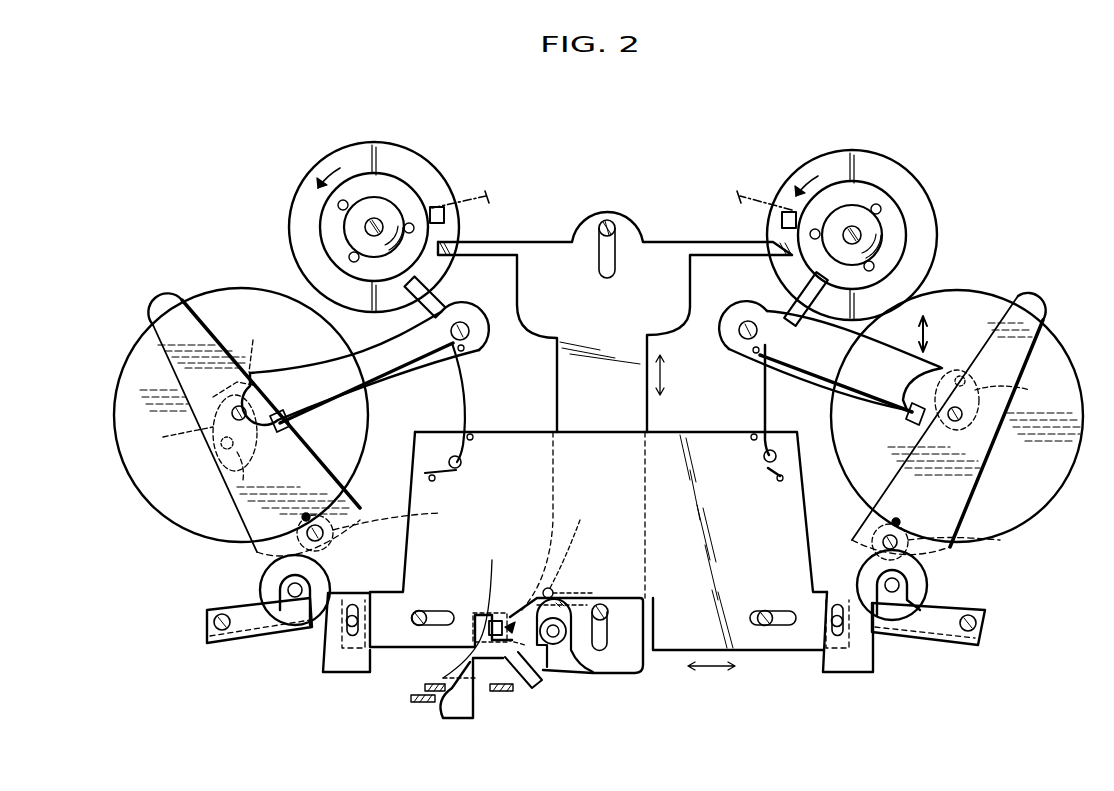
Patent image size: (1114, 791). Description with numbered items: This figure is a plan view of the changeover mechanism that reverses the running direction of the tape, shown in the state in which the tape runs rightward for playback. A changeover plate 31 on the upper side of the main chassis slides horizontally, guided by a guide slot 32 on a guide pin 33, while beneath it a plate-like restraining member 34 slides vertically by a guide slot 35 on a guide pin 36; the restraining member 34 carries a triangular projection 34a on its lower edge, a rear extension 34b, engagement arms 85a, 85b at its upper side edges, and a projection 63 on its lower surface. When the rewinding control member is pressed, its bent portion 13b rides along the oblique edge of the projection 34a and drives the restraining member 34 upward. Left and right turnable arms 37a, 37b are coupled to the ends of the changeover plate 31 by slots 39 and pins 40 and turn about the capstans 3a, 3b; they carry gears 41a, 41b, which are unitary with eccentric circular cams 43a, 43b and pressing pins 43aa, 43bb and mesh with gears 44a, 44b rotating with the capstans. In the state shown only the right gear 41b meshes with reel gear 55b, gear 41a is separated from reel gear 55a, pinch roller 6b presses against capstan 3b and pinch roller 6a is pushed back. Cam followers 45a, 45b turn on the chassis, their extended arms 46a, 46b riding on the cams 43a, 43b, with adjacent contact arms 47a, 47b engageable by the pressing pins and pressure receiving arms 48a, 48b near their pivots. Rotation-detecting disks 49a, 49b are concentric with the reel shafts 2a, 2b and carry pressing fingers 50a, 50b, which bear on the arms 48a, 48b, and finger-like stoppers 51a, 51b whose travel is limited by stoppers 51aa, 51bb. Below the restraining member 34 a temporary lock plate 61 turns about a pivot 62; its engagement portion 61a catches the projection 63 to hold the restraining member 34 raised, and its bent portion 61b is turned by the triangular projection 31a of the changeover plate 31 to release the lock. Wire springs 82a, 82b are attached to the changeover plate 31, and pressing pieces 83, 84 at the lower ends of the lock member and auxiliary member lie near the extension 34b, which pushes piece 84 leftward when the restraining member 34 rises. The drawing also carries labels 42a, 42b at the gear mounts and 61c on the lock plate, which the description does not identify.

The reel shaft 2a is at (345, 226).
The reel shaft 2b is at (885, 237).
The capstan 3a is at (322, 527).
The capstan 3b is at (888, 535).
The pinch roller 6a is at (265, 586).
The pinch roller 6b is at (922, 586).
The bent portion 13b is at (502, 691).
The changeover plate 31 is at (665, 440).
The triangular projection 31a is at (492, 610).
The guide slot 32 is at (452, 612).
The guide pin 33 is at (419, 610).
The restraining member 34 is at (557, 385).
The triangular projection 34a is at (535, 688).
The extension 34b is at (478, 720).
The guide slot 35 is at (614, 272).
The guide pin 36 is at (607, 220).
The turnable arm 37a is at (222, 473).
The turnable arm 37b is at (948, 557).
The slot 39 is at (347, 638).
The pin 40 is at (346, 624).
The gear 41a is at (132, 437).
The gear 41b is at (1054, 332).
The left pin 42a is at (244, 420).
The right pin 42b is at (965, 430).
The eccentric circular cam 43a is at (180, 438).
The pressing pin 43aa is at (232, 450).
The eccentric circular cam 43b is at (1000, 396).
The pressing pin 43bb is at (967, 383).
The gear 44a is at (432, 516).
The gear 44b is at (912, 535).
The cam follower 45a is at (302, 378).
The cam follower 45b is at (800, 372).
The extended arm 46a is at (247, 355).
The extended arm 46b is at (935, 370).
The contact arm 47a is at (312, 412).
The contact arm 47b is at (880, 405).
The pressure receiving arm 48a is at (443, 300).
The pressure receiving arm 48b is at (760, 308).
The rotation-detecting disk 49a is at (392, 185).
The rotation-detecting disk 49b is at (862, 188).
The pressing finger 50a is at (414, 300).
The pressing finger 50b is at (788, 298).
The finger-like stopper 51a is at (446, 215).
The stopper 51aa is at (468, 192).
The finger-like stopper 51b is at (793, 208).
The stopper 51bb is at (745, 190).
The reel gear 55a is at (412, 152).
The reel gear 55b is at (905, 176).
The temporary lock plate 61 is at (530, 560).
The engagement portion 61a is at (572, 535).
The bent portion 61b is at (475, 630).
The spring end 61c is at (455, 656).
The pivot 62 is at (560, 645).
The projection 63 is at (553, 593).
The wire spring 82a is at (470, 398).
The wire spring 82b is at (760, 425).
The pressing piece 83 is at (423, 703).
The pressing piece 84 is at (427, 691).
The engagement arm 85a is at (556, 240).
The engagement arm 85b is at (700, 240).